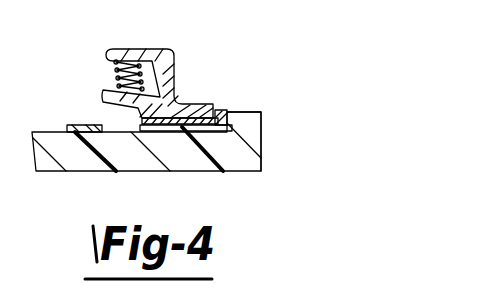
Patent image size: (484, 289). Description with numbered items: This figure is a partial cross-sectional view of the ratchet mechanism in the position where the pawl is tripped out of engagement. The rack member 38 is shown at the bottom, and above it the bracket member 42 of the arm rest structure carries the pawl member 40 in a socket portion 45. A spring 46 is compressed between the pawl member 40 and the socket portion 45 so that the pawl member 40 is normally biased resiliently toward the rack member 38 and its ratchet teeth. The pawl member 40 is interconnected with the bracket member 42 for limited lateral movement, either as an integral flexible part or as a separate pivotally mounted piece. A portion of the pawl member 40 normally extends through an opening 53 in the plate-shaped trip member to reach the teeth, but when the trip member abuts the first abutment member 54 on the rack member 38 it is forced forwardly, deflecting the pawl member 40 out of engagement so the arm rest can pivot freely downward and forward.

The rack member 38 is at (253, 139).
The pawl member 40 is at (143, 117).
The bracket member 42 is at (192, 104).
The socket portion 45 is at (114, 64).
The spring 46 is at (150, 49).
The opening 53 is at (91, 162).
The first abutment member 54 is at (242, 116).